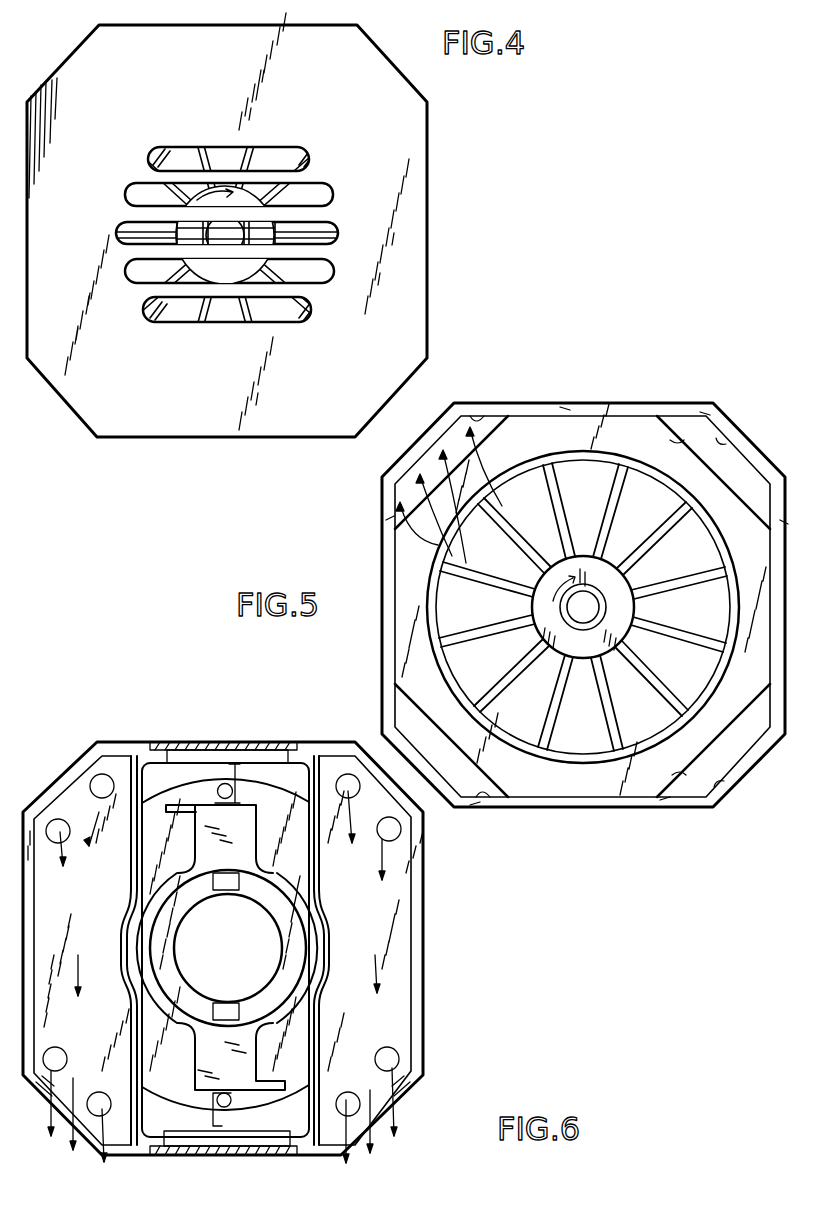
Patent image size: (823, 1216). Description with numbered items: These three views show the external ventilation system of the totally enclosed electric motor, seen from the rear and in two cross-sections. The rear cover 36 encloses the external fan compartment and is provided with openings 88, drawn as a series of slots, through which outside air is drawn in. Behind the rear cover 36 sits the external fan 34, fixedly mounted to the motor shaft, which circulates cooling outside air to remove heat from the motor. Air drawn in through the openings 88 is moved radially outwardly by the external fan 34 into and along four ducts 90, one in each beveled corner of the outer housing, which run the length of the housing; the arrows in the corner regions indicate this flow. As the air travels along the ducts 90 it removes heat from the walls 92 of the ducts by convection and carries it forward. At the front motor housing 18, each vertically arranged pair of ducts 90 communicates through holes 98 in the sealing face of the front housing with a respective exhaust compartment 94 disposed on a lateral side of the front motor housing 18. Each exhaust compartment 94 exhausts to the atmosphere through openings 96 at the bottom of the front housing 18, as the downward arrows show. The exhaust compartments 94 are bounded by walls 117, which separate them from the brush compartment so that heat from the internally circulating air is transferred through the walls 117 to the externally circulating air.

In FIG. 6, the front motor housing 18 is at (424, 979).
In FIG. 5, the external fan 34 is at (688, 577).
In FIG. 4, the rear cover 36 is at (212, 372).
In FIG. 5, the rear cover 36 is at (616, 404).
In FIG. 4, the openings 88 is at (125, 222).
In FIG. 5, the ducts 90 is at (493, 416).
In FIG. 5, the walls 92 is at (677, 441).
In FIG. 6, the exhaust compartments 94 is at (92, 947).
In FIG. 6, the openings 96 is at (51, 1102).
In FIG. 6, the holes 98 is at (58, 1048).
In FIG. 6, the wall 117 is at (130, 894).